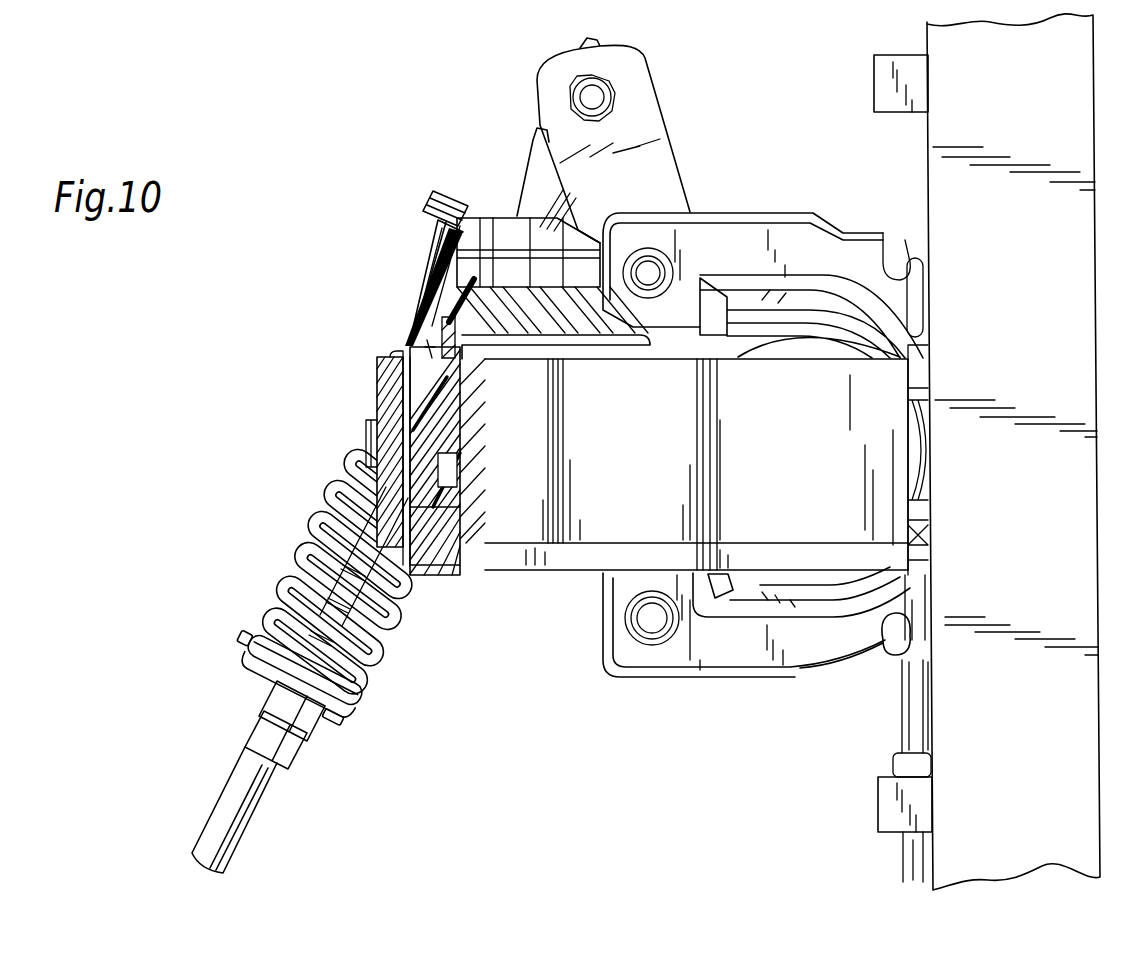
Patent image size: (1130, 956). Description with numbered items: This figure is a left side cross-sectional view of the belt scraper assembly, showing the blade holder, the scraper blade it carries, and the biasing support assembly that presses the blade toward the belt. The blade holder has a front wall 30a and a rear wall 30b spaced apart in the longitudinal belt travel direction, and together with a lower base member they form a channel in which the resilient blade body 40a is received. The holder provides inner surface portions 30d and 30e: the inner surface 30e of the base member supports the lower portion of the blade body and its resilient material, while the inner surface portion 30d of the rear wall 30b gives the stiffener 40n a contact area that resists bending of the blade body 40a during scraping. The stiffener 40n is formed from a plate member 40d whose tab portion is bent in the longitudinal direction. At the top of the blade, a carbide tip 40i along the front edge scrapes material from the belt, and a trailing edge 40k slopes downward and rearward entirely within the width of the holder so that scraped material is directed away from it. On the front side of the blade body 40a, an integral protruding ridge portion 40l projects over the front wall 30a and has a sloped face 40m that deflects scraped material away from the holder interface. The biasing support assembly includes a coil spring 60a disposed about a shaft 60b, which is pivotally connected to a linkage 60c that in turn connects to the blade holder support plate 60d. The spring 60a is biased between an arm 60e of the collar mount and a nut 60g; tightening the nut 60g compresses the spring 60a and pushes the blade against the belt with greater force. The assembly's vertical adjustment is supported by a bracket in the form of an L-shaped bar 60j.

The front wall 30a is at (470, 518).
The rear wall 30b is at (383, 400).
The inner surface portion 30d is at (405, 380).
The inner surface 30e is at (415, 485).
The blade body 40a is at (397, 343).
The plate member 40d is at (436, 240).
The carbide tip 40i is at (457, 223).
The trailing edge 40k is at (422, 308).
The protruding ridge portion 40l is at (487, 345).
The sloped face 40m is at (580, 340).
The stiffener 40n is at (430, 357).
The coil spring 60a is at (283, 586).
The shaft 60b is at (530, 182).
The linkage 60c is at (640, 110).
The blade holder support plate 60d is at (733, 213).
The arm 60e is at (433, 190).
The nut 60g is at (258, 733).
The L-shaped bar 60j is at (948, 172).